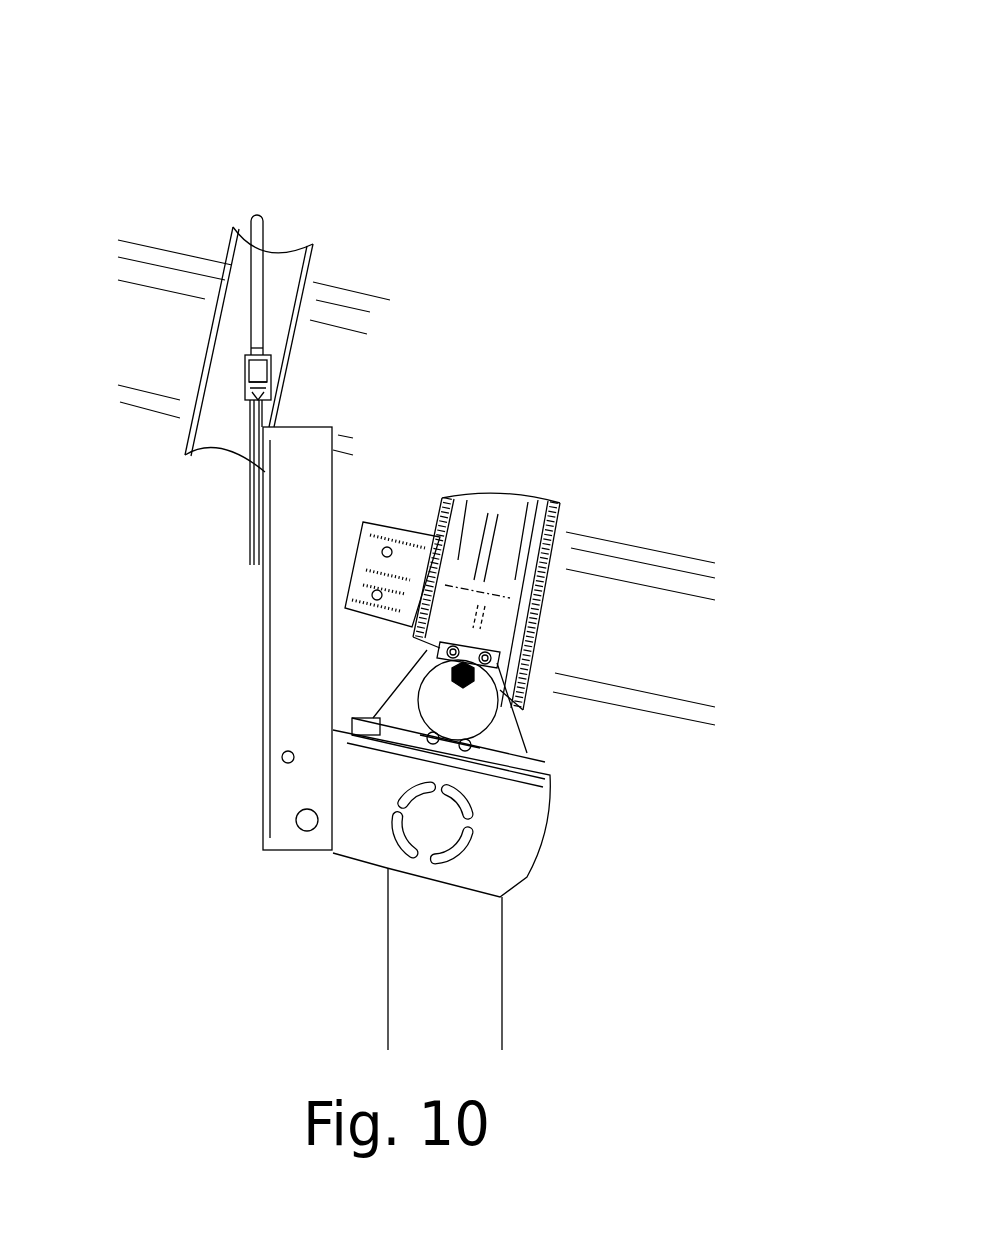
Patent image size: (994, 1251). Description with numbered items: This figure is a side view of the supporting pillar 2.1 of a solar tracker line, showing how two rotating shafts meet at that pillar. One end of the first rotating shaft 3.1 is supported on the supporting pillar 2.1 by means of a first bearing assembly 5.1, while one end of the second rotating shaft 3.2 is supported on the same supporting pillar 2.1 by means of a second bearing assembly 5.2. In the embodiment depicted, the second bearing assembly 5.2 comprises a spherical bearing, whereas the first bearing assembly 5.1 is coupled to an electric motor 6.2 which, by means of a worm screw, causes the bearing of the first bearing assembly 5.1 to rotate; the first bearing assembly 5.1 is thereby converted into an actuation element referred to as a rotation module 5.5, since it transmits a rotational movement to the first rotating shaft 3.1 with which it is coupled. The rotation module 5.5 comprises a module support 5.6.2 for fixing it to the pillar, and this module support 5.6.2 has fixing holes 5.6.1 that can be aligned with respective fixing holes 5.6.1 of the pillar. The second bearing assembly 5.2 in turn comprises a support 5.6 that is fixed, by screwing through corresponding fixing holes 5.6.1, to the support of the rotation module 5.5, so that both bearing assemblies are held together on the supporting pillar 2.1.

The supporting pillar 2.1 is at (420, 993).
The first rotating shaft 3.1 is at (620, 637).
The second rotating shaft 3.2 is at (162, 275).
The first bearing assembly 5.1 is at (468, 467).
The second bearing assembly 5.2 is at (316, 212).
The rotation module 5.5 is at (497, 543).
The support 5.6 is at (310, 657).
The fixing holes 5.6.1 is at (307, 820).
The module support 5.6.2 is at (520, 795).
The electric motor 6.2 is at (452, 705).